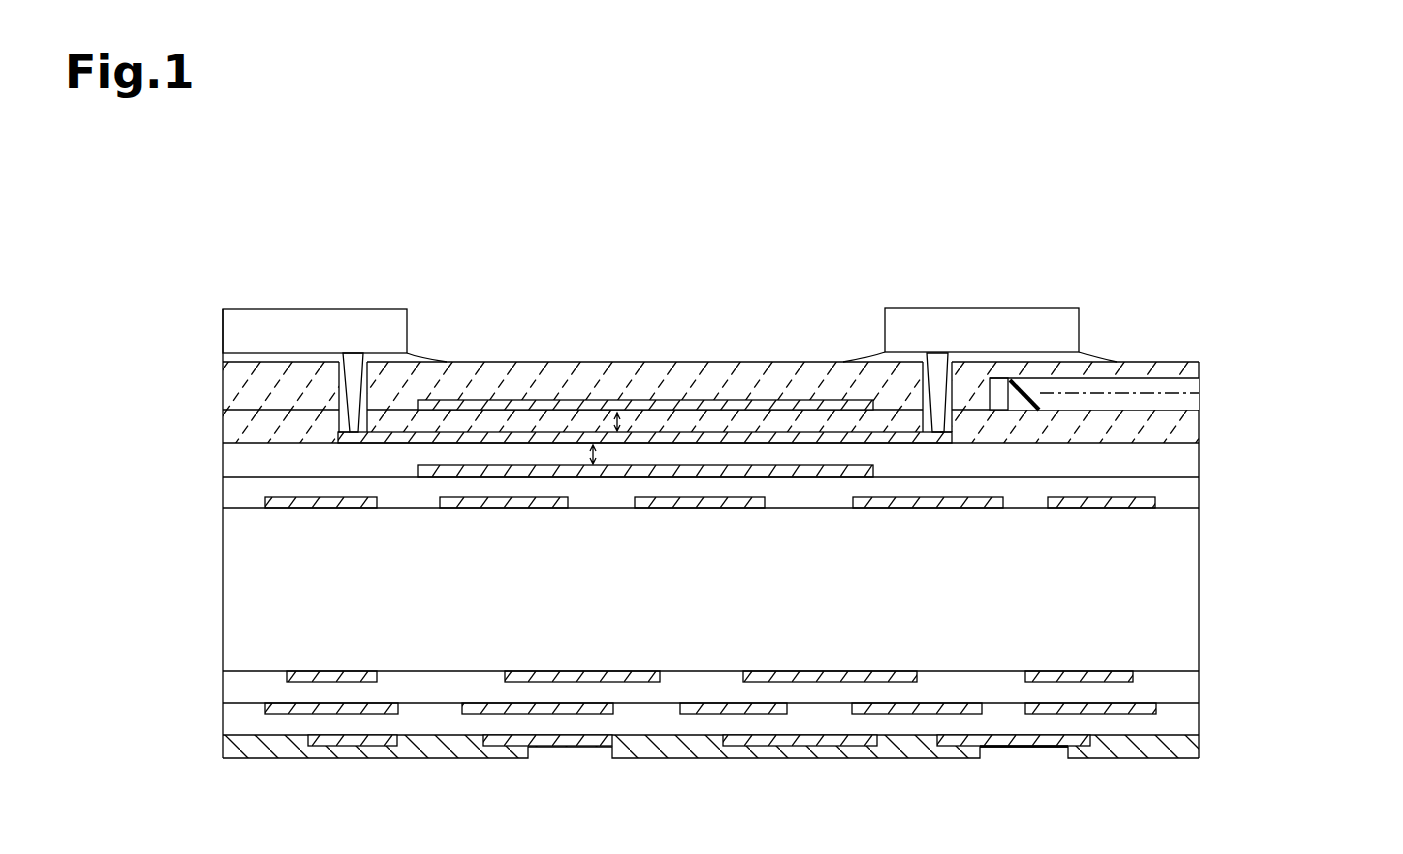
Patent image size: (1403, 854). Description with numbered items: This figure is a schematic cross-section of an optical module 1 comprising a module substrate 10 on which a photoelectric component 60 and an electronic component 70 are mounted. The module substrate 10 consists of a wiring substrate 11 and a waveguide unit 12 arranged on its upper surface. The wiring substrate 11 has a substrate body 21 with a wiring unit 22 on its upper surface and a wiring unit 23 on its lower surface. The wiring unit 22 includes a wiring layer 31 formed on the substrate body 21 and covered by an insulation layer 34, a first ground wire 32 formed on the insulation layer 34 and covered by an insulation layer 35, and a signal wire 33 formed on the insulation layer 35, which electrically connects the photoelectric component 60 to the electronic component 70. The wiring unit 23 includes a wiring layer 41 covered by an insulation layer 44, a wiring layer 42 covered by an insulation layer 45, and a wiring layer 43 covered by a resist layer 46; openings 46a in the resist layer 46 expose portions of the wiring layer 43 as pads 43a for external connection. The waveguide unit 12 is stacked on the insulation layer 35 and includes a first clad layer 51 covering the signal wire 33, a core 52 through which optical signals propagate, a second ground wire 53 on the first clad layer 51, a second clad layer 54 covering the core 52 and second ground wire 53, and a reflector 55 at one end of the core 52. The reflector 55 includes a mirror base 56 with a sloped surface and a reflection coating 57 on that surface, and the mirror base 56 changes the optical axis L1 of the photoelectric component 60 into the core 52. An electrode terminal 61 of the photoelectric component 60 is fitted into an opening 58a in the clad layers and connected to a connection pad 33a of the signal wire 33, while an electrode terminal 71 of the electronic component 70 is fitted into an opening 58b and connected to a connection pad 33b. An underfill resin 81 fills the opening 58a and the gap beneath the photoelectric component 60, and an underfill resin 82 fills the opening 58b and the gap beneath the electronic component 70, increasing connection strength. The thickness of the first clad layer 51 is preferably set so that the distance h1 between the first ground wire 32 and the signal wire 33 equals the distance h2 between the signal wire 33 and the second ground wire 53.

The optical module 1 is at (1236, 242).
The module substrate 10 is at (1340, 365).
The wiring substrate 11 is at (1315, 732).
The waveguide unit 12 is at (1217, 332).
The substrate body 21 is at (1200, 600).
The wiring unit 22 is at (1256, 453).
The wiring unit 23 is at (1253, 666).
The wiring layer 31 is at (983, 510).
The first ground wire 32 is at (816, 478).
The signal wire 33 is at (882, 443).
The connection pad 33a is at (958, 435).
The connection pad 33b is at (347, 432).
The insulation layer 34 is at (1200, 492).
The insulation layer 35 is at (1200, 463).
The wiring layer 41 is at (897, 670).
The wiring layer 42 is at (965, 702).
The wiring layer 43 is at (951, 758).
The pad 43a is at (996, 752).
The insulation layer 44 is at (1200, 684).
The insulation layer 45 is at (1200, 716).
The resist layer 46 is at (1200, 747).
The opening 46a is at (1055, 756).
The first clad layer 51 is at (1205, 430).
The core 52 is at (1205, 401).
The second ground wire 53 is at (716, 398).
The second clad layer 54 is at (1178, 361).
The reflector 55 is at (1130, 257).
The mirror base 56 is at (1003, 382).
The reflection coating 57 is at (1040, 405).
The opening 58a is at (945, 368).
The opening 58b is at (345, 375).
The photoelectric component 60 is at (896, 307).
The electrode terminal 61 is at (927, 360).
The electronic component 70 is at (249, 309).
The electrode terminal 71 is at (372, 355).
The underfill resin 81 is at (860, 350).
The underfill resin 82 is at (413, 350).
The distance h1 is at (593, 466).
The distance h2 is at (618, 410).
The optical axis L1 is at (1207, 393).